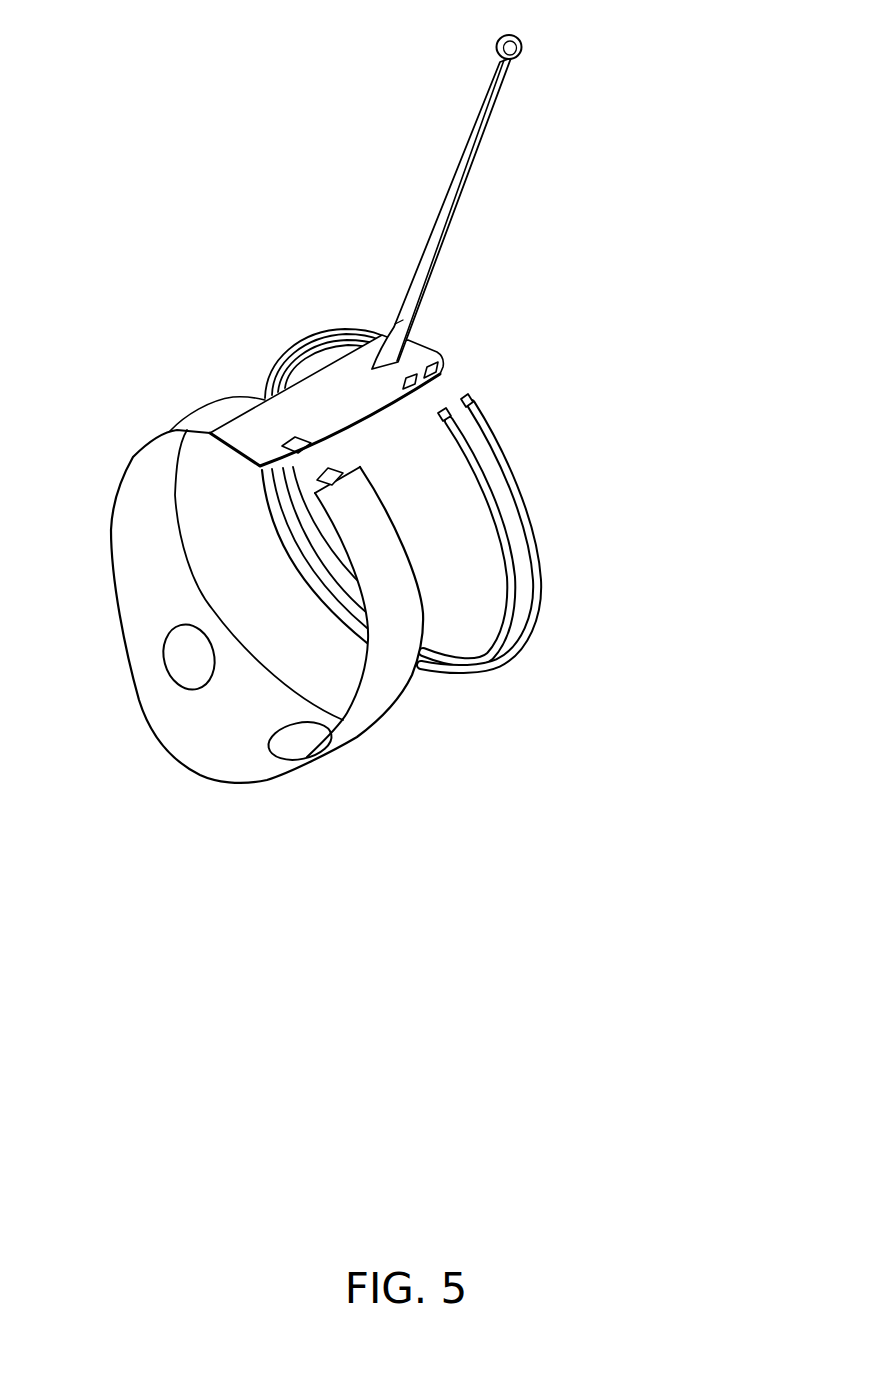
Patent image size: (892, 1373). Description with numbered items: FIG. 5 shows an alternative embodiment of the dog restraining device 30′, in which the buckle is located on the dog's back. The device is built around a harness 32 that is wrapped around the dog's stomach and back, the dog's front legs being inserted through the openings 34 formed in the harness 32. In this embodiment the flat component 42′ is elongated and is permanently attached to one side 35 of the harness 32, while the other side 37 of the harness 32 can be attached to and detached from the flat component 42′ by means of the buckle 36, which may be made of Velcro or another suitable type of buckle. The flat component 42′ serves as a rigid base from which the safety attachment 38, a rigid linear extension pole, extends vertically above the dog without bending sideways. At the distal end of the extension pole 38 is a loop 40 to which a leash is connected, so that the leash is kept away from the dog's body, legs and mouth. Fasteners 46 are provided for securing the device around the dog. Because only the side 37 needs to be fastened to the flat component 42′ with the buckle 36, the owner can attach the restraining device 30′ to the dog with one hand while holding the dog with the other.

The dog restraining device 30′ is at (582, 298).
The harness 32 is at (170, 757).
The openings 34 is at (177, 660).
The one side of harness 35 is at (148, 380).
The buckle 36 is at (334, 470).
The other side of harness 37 is at (432, 713).
The safety attachment 38 is at (472, 127).
The loop 40 is at (518, 38).
The flat component 42′ is at (436, 352).
The fasteners 46 is at (470, 395).